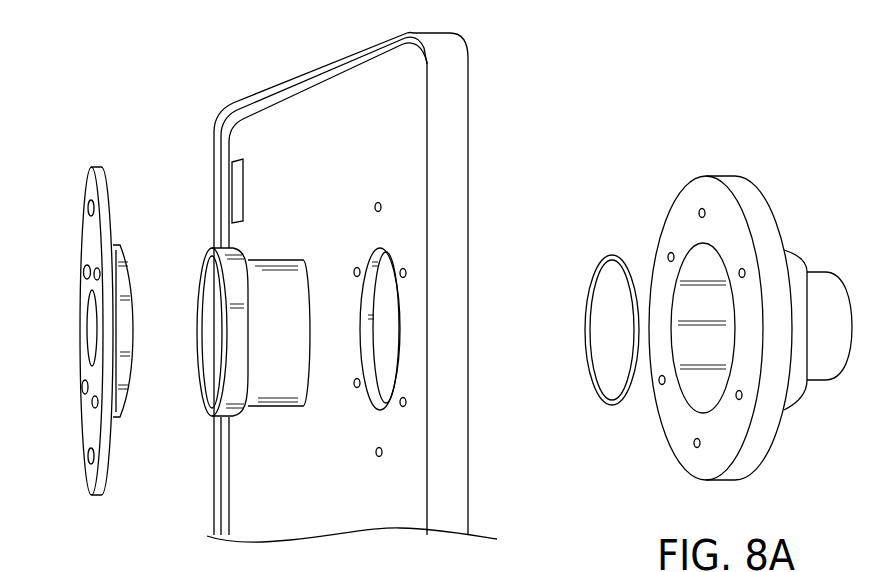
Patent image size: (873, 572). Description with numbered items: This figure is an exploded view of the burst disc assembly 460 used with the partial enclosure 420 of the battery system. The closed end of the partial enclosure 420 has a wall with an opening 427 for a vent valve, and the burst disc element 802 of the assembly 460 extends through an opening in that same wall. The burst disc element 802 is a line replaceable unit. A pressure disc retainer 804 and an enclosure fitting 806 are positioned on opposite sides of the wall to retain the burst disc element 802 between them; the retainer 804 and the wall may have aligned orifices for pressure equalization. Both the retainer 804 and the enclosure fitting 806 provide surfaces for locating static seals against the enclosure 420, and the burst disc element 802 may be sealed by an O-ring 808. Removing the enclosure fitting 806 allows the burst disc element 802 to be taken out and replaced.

The partial enclosure 420 is at (468, 102).
The opening 427 is at (382, 328).
The burst disc assembly 460 is at (708, 61).
The burst disc element 802 is at (202, 268).
The pressure disc retainer 804 is at (766, 190).
The enclosure fitting 806 is at (88, 190).
The O-ring 808 is at (595, 272).